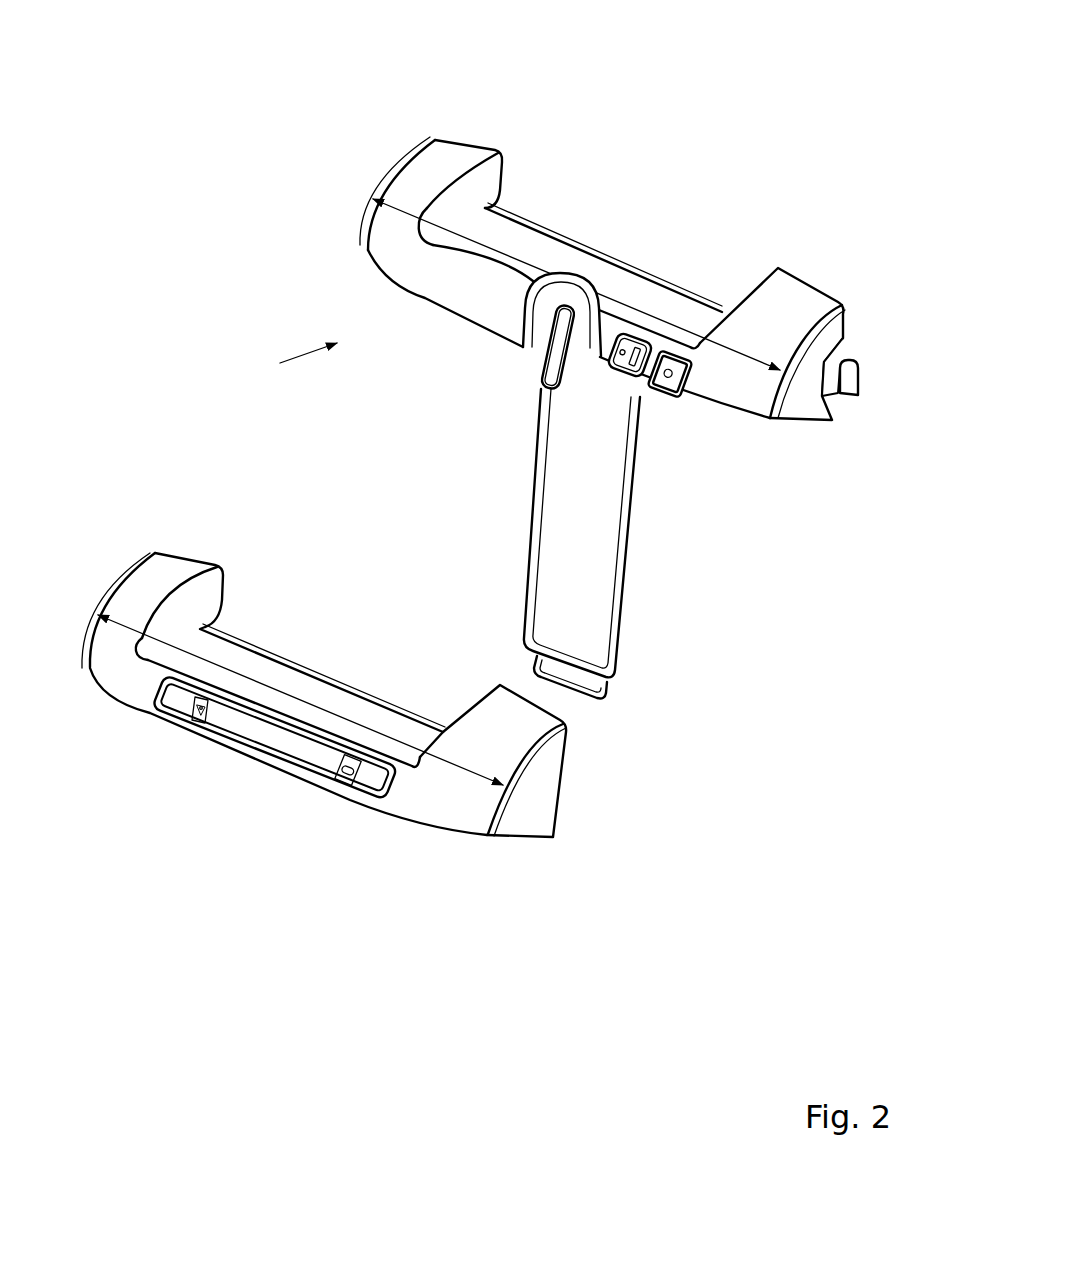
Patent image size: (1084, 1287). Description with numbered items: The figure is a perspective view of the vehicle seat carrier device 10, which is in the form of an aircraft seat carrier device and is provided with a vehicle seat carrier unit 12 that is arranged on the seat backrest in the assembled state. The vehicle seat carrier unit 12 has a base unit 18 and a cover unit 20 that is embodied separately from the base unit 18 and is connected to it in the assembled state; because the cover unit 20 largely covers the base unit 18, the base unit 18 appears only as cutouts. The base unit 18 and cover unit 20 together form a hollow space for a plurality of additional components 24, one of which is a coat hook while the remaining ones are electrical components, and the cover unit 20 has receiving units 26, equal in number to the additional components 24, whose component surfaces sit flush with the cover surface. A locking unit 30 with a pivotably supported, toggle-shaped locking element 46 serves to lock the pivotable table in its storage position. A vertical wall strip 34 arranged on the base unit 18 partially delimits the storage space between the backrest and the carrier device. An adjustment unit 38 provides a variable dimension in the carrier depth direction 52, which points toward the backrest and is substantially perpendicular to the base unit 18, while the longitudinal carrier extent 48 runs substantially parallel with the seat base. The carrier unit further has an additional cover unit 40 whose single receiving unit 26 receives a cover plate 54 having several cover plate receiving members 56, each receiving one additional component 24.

The vehicle seat carrier device 10 is at (742, 86).
The vehicle seat carrier unit 12 is at (660, 90).
The base unit 18 is at (540, 230).
The cover unit 20 is at (450, 152).
The additional components 24 is at (644, 378).
The receiving unit 26 is at (638, 334).
The locking unit 30 is at (577, 294).
The vertical wall strip 34 is at (605, 540).
The adjustment unit 38 is at (819, 280).
The additional cover unit 40 is at (170, 568).
The locking element 46 is at (550, 358).
The longitudinal carrier extent 48 is at (410, 212).
The carrier depth direction 52 is at (298, 338).
The cover plate 54 is at (273, 740).
The cover plate receiving members 56 is at (331, 790).